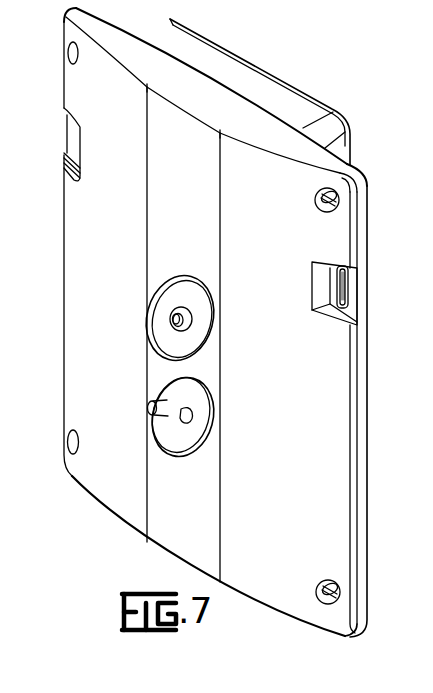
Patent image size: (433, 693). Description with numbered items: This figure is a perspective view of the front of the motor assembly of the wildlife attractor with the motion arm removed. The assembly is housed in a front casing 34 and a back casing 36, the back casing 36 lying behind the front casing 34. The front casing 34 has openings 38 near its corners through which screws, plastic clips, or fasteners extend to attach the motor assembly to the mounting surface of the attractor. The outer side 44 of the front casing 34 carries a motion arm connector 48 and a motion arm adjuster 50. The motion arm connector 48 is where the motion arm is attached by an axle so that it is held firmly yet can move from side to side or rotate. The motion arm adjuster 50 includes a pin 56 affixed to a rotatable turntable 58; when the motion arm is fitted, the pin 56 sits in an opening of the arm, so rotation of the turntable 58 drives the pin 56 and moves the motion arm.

The front casing 34 is at (258, 575).
The back casing 36 is at (272, 92).
The openings 38 is at (68, 54).
The outer side 44 is at (323, 413).
The motion arm connector 48 is at (200, 313).
The motion arm adjuster 50 is at (210, 413).
The pin 56 is at (150, 407).
The turntable 58 is at (197, 440).